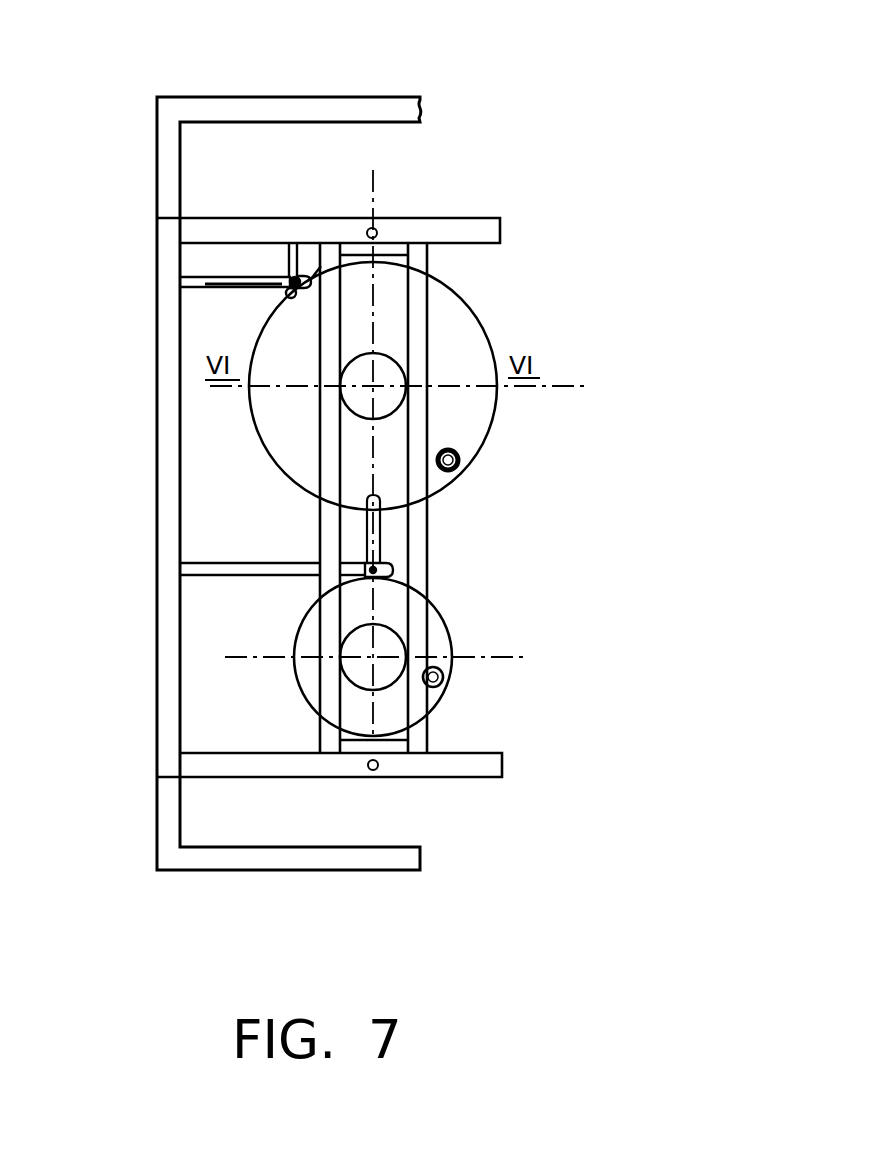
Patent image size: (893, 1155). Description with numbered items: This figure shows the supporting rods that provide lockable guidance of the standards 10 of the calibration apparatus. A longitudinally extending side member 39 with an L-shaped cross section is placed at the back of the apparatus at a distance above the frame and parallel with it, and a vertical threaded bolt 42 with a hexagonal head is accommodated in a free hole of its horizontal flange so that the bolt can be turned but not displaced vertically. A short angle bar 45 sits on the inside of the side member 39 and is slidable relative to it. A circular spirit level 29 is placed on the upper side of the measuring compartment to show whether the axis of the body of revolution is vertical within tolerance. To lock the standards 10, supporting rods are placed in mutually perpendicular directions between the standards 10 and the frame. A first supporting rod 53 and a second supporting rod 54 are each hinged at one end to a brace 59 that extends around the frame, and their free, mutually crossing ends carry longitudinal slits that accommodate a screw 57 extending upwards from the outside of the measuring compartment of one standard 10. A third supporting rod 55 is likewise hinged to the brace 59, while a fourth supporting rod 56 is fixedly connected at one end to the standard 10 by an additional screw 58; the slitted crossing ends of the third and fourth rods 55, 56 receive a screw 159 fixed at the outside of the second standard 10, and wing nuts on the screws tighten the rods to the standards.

The brace 59 is at (256, 108).
The side member 39 is at (487, 235).
The angle bar 45 is at (405, 243).
The bolt 42 is at (375, 236).
The standard 10 is at (462, 320).
The circular spirit level 29 is at (460, 462).
The first supporting rod 53 is at (290, 256).
The second supporting rod 54 is at (200, 288).
The screw 57 is at (290, 277).
The third supporting rod 55 is at (237, 568).
The additional screw 58 is at (345, 505).
The fourth supporting rod 56 is at (375, 535).
The screw 159 is at (390, 576).